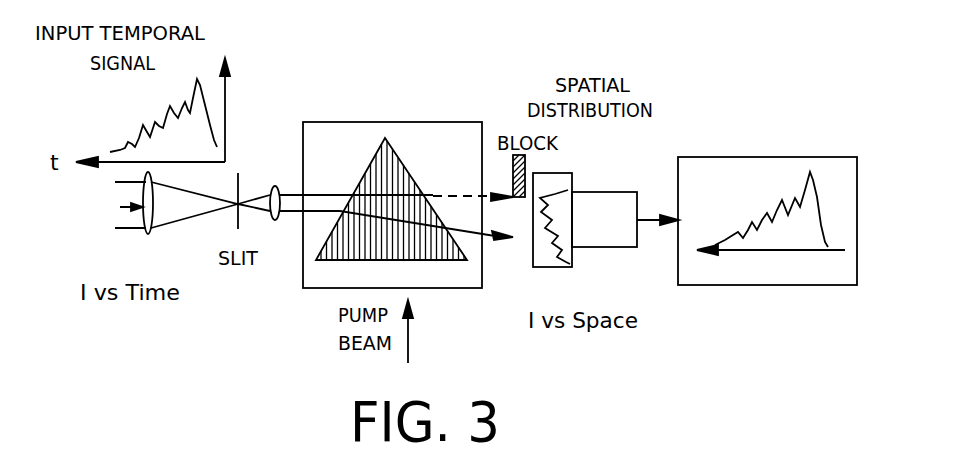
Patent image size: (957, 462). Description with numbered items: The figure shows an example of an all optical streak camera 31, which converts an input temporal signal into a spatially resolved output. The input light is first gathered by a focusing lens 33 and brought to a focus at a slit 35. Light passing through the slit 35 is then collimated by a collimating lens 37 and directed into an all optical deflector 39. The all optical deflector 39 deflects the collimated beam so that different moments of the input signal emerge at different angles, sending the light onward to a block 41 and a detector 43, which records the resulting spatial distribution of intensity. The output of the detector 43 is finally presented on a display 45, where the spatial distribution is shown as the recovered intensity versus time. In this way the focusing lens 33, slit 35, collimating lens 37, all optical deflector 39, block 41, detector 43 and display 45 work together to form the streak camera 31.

The optical streak camera 31 is at (588, 349).
The focusing lens 33 is at (146, 233).
The slit 35 is at (237, 227).
The collimating lens 37 is at (276, 186).
The all optical deflector 39 is at (418, 122).
The block 41 is at (537, 172).
The detector 43 is at (602, 248).
The display 45 is at (800, 157).